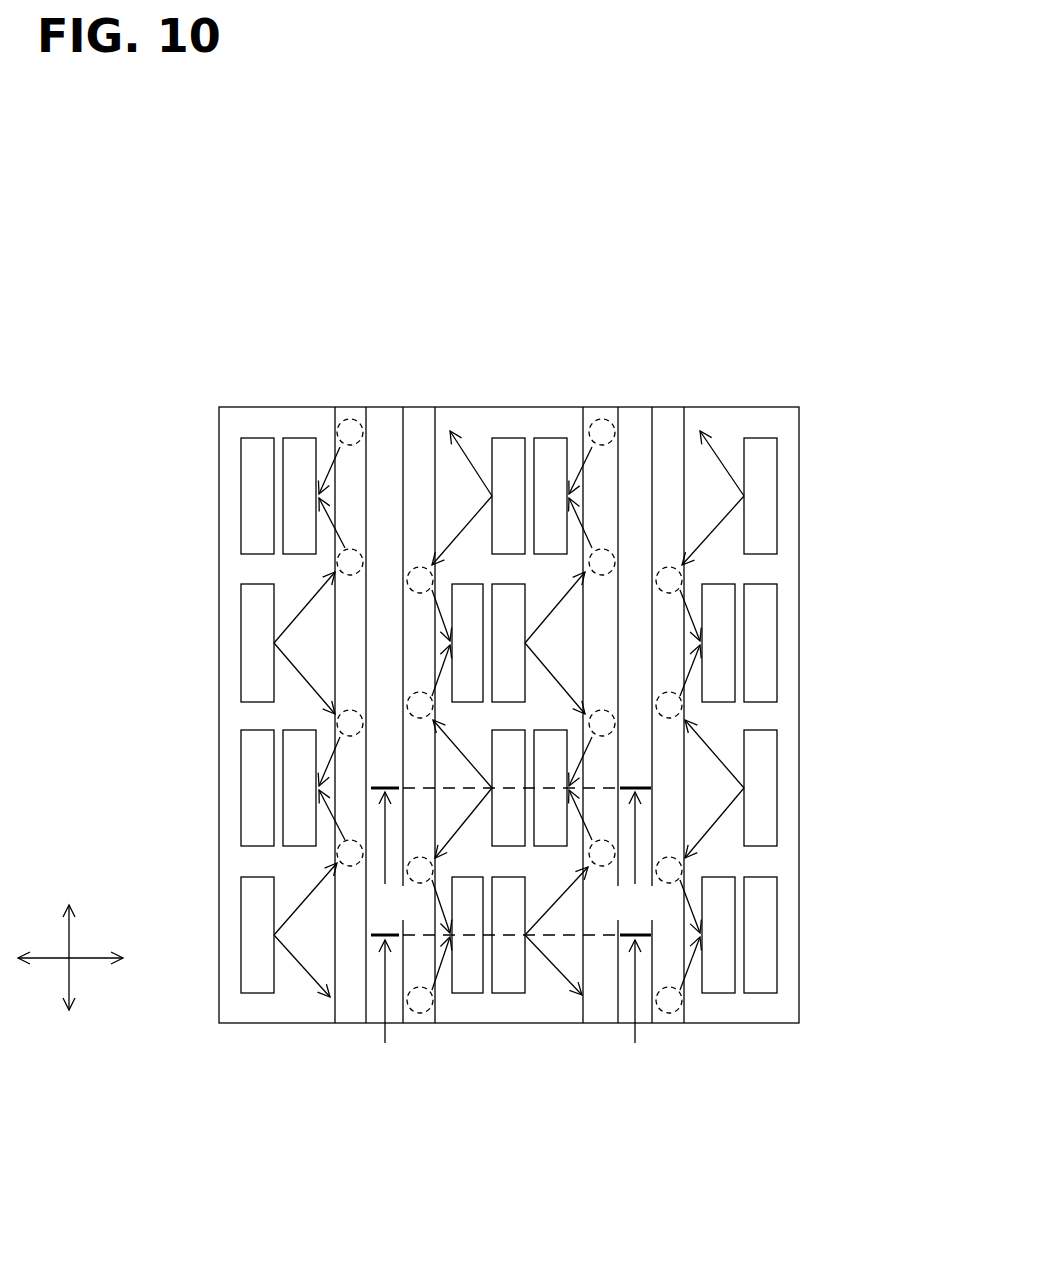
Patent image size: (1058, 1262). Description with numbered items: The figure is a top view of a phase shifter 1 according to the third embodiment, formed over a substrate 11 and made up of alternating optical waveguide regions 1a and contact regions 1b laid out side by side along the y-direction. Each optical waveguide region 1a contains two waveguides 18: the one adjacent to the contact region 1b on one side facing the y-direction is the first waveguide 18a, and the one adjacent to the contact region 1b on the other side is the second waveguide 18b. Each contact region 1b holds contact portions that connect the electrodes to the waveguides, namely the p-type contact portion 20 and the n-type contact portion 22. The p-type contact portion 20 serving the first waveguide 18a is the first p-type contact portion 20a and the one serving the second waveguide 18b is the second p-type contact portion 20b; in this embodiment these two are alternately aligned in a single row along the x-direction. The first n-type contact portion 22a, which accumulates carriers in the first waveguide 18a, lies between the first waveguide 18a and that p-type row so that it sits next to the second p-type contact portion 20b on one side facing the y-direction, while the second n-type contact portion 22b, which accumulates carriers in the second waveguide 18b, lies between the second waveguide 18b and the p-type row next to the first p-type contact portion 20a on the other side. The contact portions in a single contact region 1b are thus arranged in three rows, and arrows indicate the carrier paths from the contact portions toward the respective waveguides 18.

The phase shifter 1 is at (293, 338).
The optical waveguide region 1a is at (435, 397).
The contact region 1b is at (335, 397).
The substrate 11 is at (219, 445).
The waveguide 18 is at (552, 764).
The first waveguide 18a is at (666, 1018).
The second waveguide 18b is at (600, 1018).
The p-type contact portion 20 is at (589, 715).
The first p-type contact portion 20a is at (768, 461).
The second p-type contact portion 20b is at (764, 672).
The n-type contact portion 22 is at (610, 715).
The first n-type contact portion 22a is at (716, 593).
The second n-type contact portion 22b is at (550, 755).